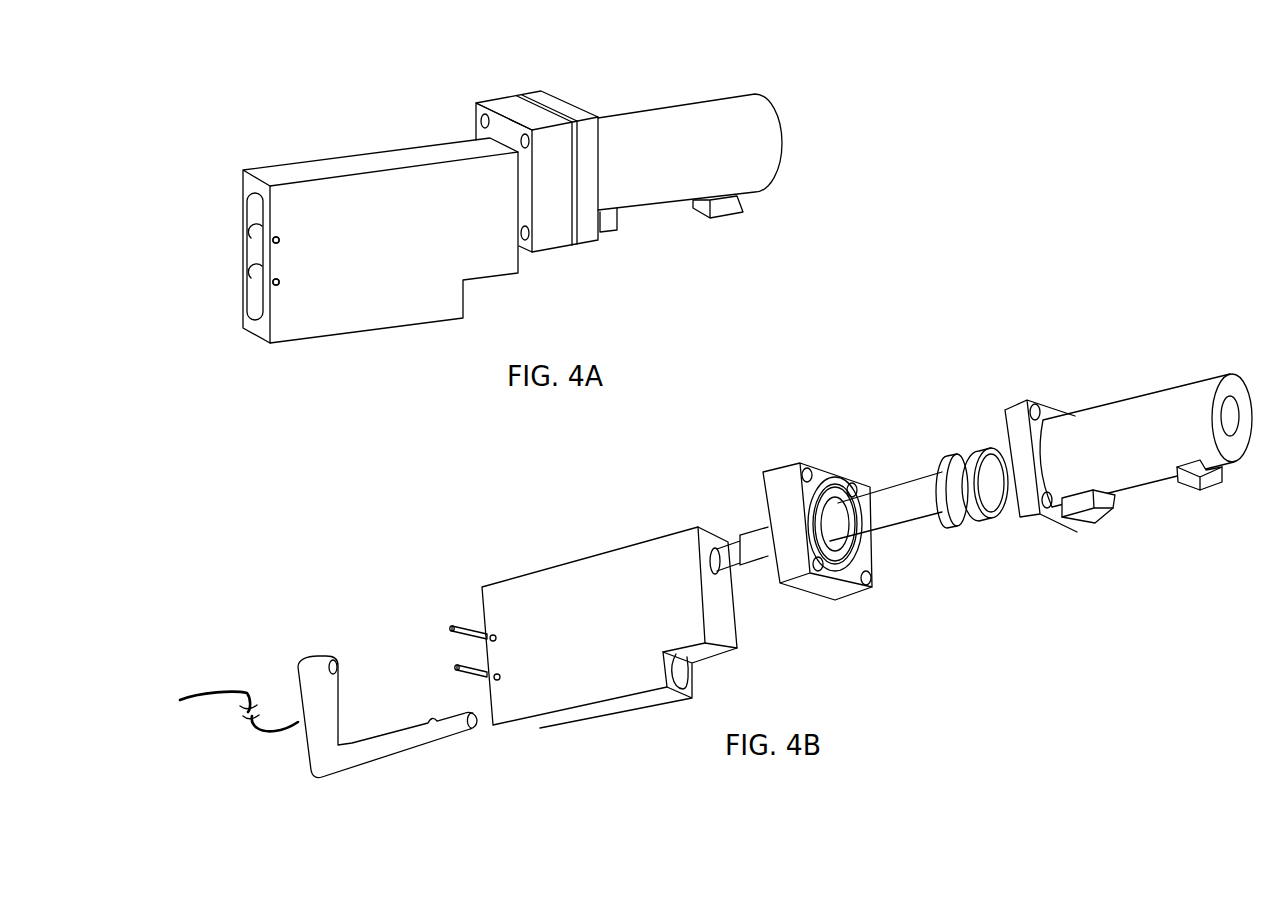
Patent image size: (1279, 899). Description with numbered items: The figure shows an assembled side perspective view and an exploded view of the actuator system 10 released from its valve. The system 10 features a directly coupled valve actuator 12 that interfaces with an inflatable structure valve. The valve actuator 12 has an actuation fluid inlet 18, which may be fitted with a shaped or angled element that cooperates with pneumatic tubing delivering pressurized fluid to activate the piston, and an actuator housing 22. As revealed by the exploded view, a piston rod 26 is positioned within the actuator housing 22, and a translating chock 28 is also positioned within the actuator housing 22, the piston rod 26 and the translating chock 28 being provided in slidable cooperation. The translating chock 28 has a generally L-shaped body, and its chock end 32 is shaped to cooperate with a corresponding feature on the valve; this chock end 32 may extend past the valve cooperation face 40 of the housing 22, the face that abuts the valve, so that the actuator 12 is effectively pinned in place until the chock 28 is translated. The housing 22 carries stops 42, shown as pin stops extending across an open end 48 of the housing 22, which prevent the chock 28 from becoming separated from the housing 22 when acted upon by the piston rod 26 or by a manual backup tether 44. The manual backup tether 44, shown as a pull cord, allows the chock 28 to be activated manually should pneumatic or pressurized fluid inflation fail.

In FIG. 4A, the actuator system 10 is at (533, 262).
In FIG. 4A, the valve actuator 12 is at (586, 70).
In FIG. 4A, the actuation fluid inlet 18 is at (696, 162).
In FIG. 4B, the actuation fluid inlet 18 is at (1145, 477).
In FIG. 4A, the actuator housing 22 is at (409, 256).
In FIG. 4B, the actuator housing 22 is at (618, 617).
In FIG. 4B, the piston rod 26 is at (897, 502).
In FIG. 4B, the translating chock 28 is at (367, 745).
In FIG. 4B, the chock end 32 is at (480, 722).
In FIG. 4B, the valve cooperation face 40 is at (731, 683).
In FIG. 4A, the stops 42 is at (279, 240).
In FIG. 4B, the stops 42 is at (496, 638).
In FIG. 4B, the manual backup tether 44 is at (243, 690).
In FIG. 4A, the open end 48 is at (243, 318).